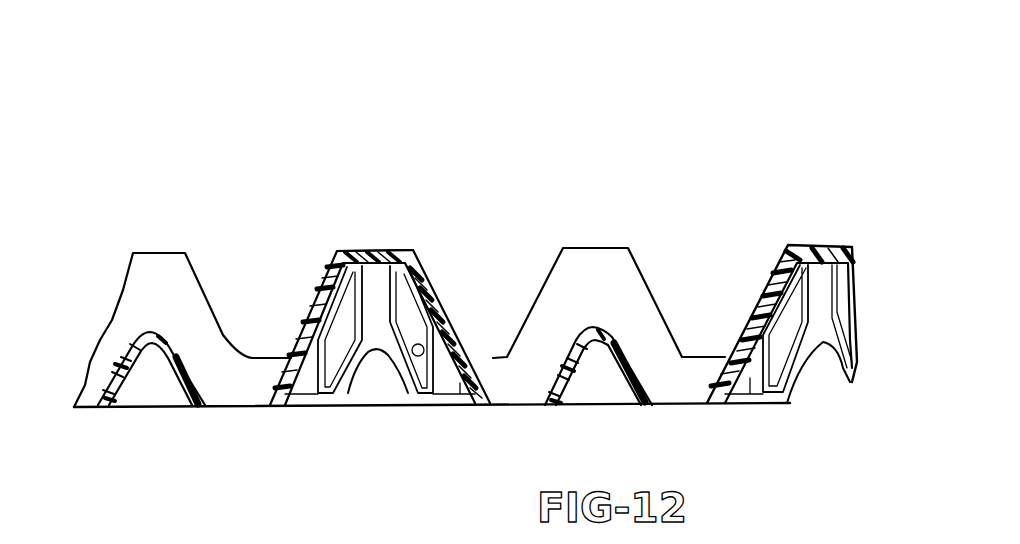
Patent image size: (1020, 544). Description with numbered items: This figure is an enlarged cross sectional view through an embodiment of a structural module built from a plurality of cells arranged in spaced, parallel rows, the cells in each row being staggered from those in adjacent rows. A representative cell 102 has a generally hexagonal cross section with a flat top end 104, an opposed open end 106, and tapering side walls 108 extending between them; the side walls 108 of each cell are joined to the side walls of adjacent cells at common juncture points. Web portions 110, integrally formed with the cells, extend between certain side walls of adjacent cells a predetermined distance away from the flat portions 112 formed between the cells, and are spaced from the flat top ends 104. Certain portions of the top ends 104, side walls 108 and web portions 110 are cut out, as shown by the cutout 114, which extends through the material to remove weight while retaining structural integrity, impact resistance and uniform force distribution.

The cell 102 is at (335, 228).
The flat top end 104 is at (413, 258).
The open end 106 is at (377, 400).
The side walls 108 is at (303, 322).
The web portions 110 is at (236, 345).
The flat portions 112 is at (287, 408).
The cutout 114 is at (413, 356).